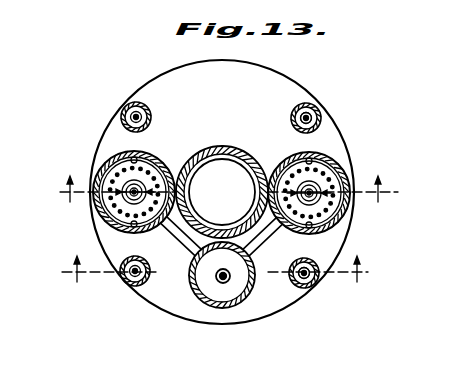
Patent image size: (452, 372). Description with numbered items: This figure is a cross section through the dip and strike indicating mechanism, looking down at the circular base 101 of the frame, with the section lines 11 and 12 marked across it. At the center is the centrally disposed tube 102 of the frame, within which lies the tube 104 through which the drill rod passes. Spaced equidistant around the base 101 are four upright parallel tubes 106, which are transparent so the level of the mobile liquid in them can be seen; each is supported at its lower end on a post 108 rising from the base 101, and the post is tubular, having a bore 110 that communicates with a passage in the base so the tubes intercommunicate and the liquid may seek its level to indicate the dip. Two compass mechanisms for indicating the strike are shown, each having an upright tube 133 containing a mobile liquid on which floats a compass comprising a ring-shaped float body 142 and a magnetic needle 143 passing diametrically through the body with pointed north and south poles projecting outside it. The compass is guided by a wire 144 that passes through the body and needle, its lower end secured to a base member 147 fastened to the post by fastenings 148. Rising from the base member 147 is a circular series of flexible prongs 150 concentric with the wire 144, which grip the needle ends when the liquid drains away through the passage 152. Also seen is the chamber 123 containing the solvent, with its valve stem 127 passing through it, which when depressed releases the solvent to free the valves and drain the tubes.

The section line 11- 11 is at (218, 269).
The section line 12- 12 is at (236, 189).
The base 101 is at (275, 81).
The centrally disposed tube 102 is at (245, 152).
The tube 104 is at (202, 160).
The upright parallel tubes 106 is at (133, 104).
The post 108 is at (312, 119).
The bore 110 is at (314, 113).
The chamber or casing 123 is at (217, 308).
The valve stem 127 is at (228, 279).
The upright tube 133 is at (110, 164).
The float body 142 is at (308, 158).
The magnetic needle 143 is at (110, 206).
The wire 144 is at (160, 149).
The base member 147 is at (110, 172).
The fastenings 148 is at (132, 158).
The prongs 150 is at (115, 232).
The tube or passage 152 is at (186, 262).